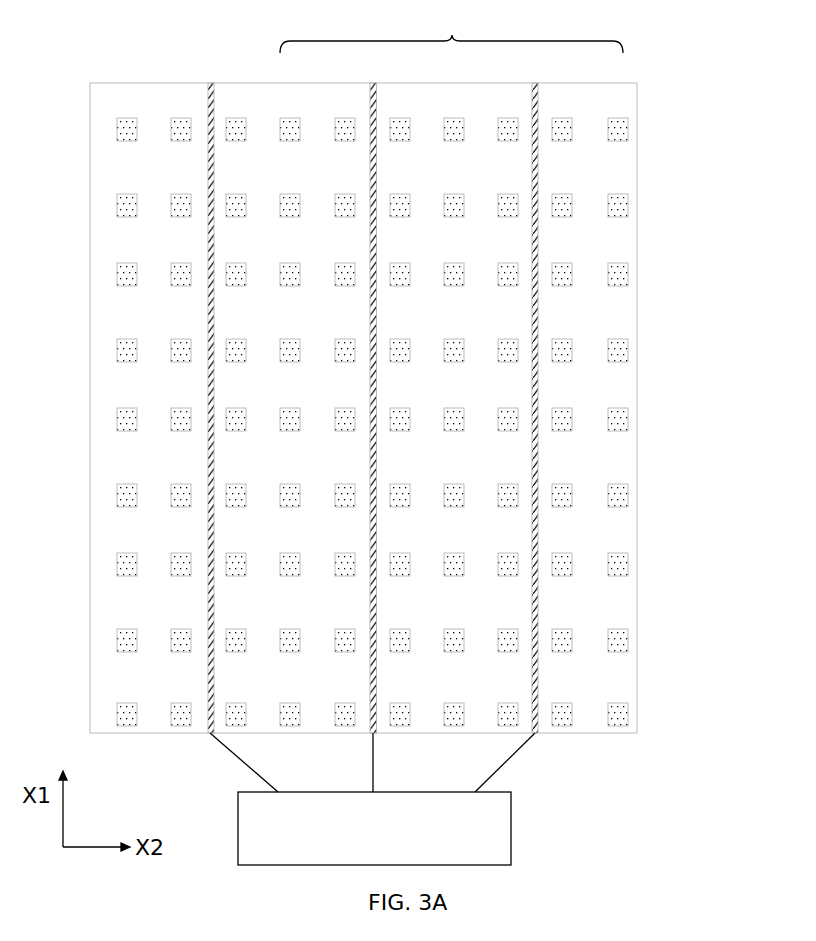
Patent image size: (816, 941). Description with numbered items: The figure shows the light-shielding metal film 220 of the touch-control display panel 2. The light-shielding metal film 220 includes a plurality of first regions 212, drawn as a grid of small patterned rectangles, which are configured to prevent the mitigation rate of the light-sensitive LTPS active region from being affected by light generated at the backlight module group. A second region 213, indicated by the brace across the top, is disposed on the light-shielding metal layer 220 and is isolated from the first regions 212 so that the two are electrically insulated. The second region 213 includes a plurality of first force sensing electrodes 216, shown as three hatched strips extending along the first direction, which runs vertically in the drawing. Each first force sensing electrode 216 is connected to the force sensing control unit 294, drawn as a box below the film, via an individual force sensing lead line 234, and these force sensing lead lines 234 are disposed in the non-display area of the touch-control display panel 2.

The touch-control display panel 2 is at (132, 60).
The first regions 212 is at (612, 214).
The second region 213 is at (451, 30).
The first force sensing electrodes 216 is at (212, 118).
The light-shielding metal film 220 is at (582, 321).
The force sensing lead lines 234 is at (237, 757).
The force sensing control unit 294 is at (492, 847).